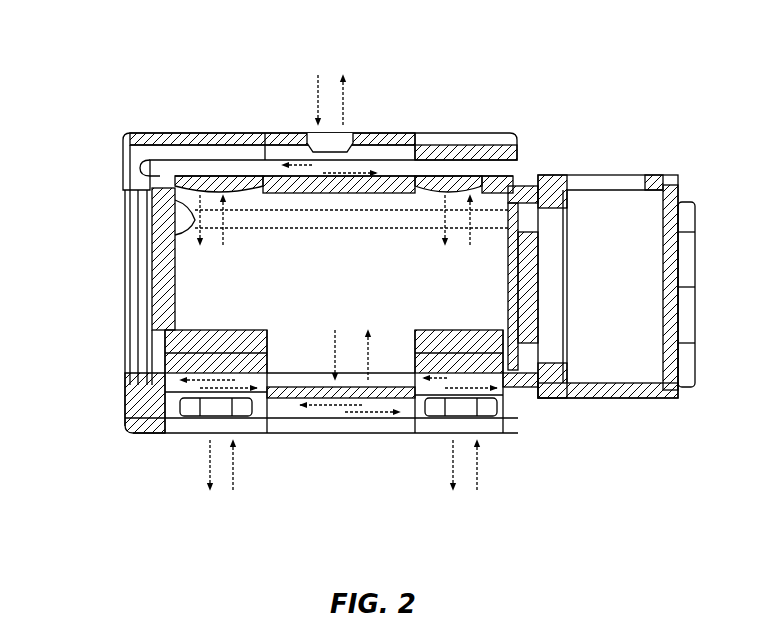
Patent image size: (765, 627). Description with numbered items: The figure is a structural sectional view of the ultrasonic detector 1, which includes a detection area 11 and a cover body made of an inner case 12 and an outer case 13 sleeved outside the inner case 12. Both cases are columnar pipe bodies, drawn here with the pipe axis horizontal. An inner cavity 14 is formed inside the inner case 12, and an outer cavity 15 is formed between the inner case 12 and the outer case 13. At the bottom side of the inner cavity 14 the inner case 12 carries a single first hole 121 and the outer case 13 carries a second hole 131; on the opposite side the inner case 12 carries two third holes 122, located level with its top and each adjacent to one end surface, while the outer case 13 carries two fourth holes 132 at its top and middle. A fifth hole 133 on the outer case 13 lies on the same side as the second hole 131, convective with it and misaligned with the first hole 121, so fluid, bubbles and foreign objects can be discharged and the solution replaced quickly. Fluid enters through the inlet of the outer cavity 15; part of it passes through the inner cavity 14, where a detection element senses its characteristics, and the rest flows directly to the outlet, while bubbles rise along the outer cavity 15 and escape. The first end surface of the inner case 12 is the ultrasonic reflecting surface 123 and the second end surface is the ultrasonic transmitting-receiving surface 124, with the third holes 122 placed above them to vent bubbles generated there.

The ultrasonic detector 1 is at (356, 280).
The detection area 11 is at (162, 262).
The inner case 12 is at (136, 340).
The outer case 13 is at (130, 420).
The inner cavity 14 is at (142, 310).
The outer cavity 15 is at (265, 156).
The first hole 121 is at (340, 387).
The third hole 122 is at (207, 180).
The ultrasonic reflecting surface 123 is at (125, 232).
The ultrasonic transmitting-receiving surface 124 is at (540, 267).
The second hole 131 is at (185, 435).
The fourth hole 132 is at (340, 142).
The fifth hole 133 is at (250, 330).